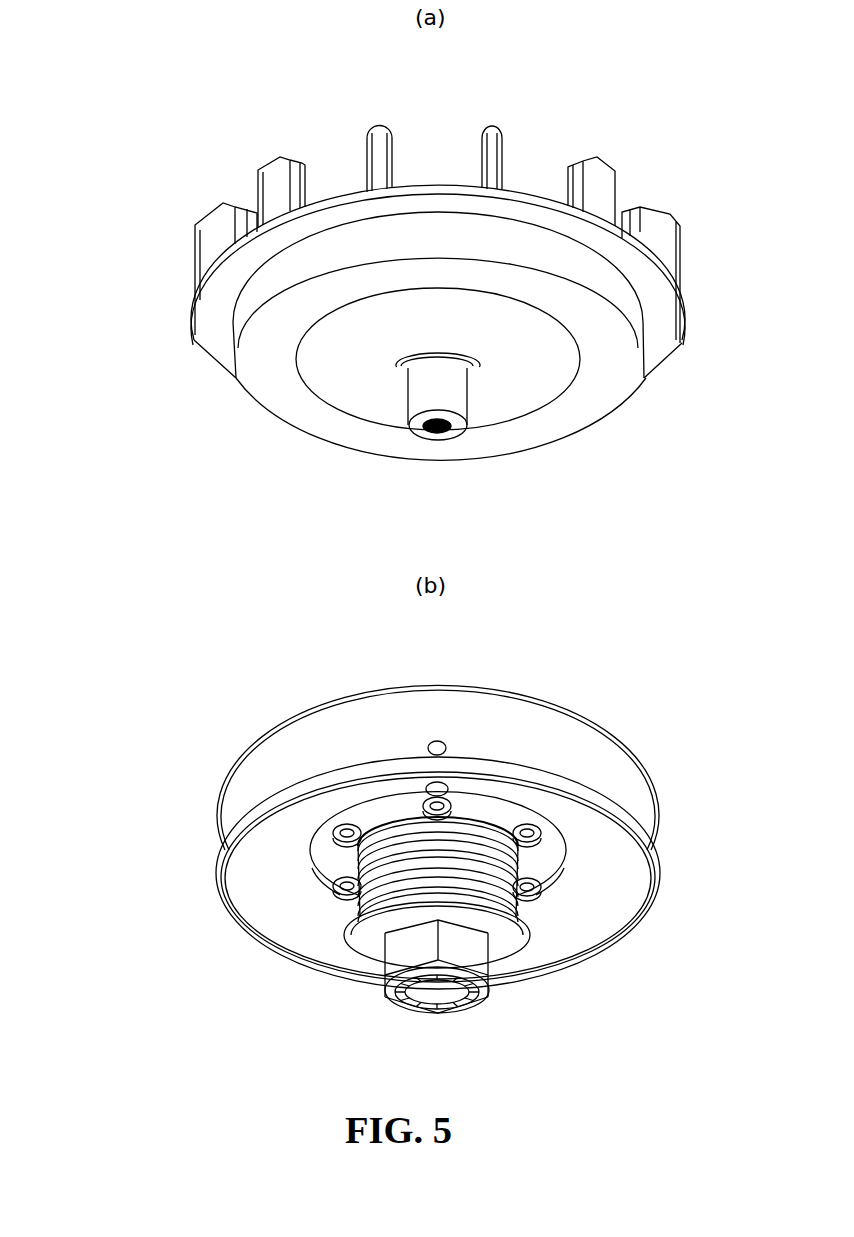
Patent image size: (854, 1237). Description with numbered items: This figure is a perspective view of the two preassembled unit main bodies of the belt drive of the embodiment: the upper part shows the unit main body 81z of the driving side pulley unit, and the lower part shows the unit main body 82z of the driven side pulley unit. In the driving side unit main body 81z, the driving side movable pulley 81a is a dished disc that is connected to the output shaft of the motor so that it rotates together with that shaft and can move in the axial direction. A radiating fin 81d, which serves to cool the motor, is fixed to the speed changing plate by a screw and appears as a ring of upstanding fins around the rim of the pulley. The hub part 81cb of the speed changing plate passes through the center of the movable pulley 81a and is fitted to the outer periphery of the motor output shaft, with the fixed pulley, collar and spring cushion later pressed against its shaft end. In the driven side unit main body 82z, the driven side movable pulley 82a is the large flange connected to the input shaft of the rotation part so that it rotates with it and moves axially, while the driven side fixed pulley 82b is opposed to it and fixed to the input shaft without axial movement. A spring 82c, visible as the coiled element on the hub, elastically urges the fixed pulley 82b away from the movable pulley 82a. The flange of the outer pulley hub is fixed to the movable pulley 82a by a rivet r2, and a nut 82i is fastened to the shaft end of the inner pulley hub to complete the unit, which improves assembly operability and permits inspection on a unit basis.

The unit main body 81z is at (556, 112).
The driving side movable pulley 81a is at (320, 423).
The radiating fin 81d is at (600, 180).
The hub part of the speed changing plate 81cb is at (457, 400).
The unit main body 82z is at (207, 719).
The driven side movable pulley 82a is at (252, 880).
The driven side fixed pulley 82b is at (237, 795).
The spring 82c is at (322, 868).
The nut 82i is at (397, 1003).
The rivet r2 is at (537, 890).